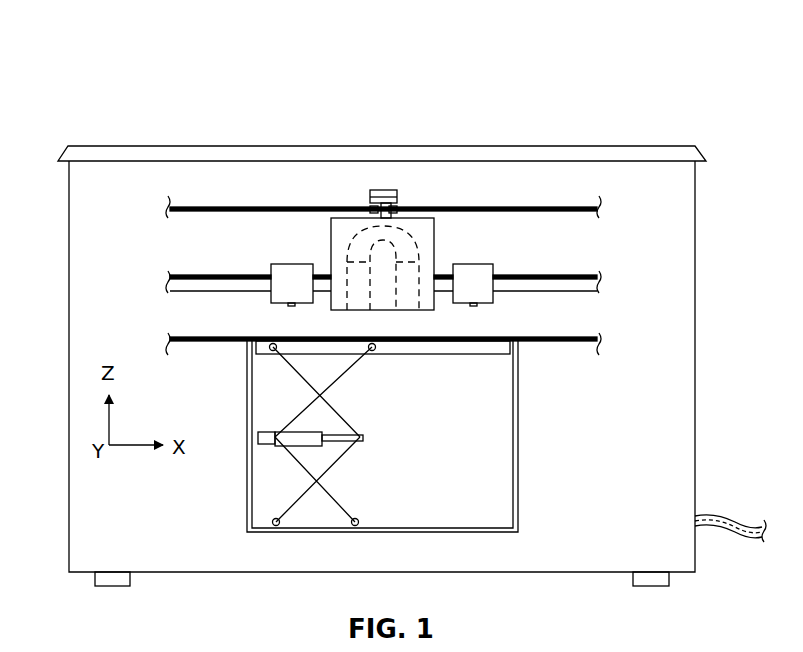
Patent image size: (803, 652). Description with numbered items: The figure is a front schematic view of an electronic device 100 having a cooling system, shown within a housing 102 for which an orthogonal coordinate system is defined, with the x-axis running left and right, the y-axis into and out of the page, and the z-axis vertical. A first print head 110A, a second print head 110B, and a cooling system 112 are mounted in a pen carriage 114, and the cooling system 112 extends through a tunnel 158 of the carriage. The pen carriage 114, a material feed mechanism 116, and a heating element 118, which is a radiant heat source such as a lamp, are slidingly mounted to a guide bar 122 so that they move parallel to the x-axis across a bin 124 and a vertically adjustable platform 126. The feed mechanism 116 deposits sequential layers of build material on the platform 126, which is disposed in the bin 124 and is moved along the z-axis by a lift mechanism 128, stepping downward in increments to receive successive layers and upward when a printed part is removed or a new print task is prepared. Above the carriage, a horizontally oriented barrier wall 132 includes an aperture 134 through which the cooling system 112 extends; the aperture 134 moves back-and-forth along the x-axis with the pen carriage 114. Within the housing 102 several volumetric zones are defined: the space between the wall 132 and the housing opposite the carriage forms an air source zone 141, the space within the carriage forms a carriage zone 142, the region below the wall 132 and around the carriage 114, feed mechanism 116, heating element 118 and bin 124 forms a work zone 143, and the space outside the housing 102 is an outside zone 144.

The electronic device 100 is at (95, 80).
The housing 102 is at (68, 321).
The first print head 110A is at (347, 297).
The second print head 110B is at (420, 297).
The cooling system 112 is at (405, 190).
The pen carriage 114 is at (330, 246).
The material feed mechanism 116 is at (478, 282).
The heating element 118 is at (271, 270).
The guide bar 122 is at (190, 283).
The bin 124 is at (247, 468).
The vertically adjustable platform 126 is at (476, 346).
The lift mechanism 128 is at (340, 412).
The barrier wall 132 is at (228, 195).
The aperture 134 is at (388, 190).
The air source zone 141 is at (668, 179).
The carriage zone 142 is at (421, 252).
The work zone 143 is at (538, 318).
The outside zone 144 is at (713, 339).
The tunnel 158 is at (380, 215).